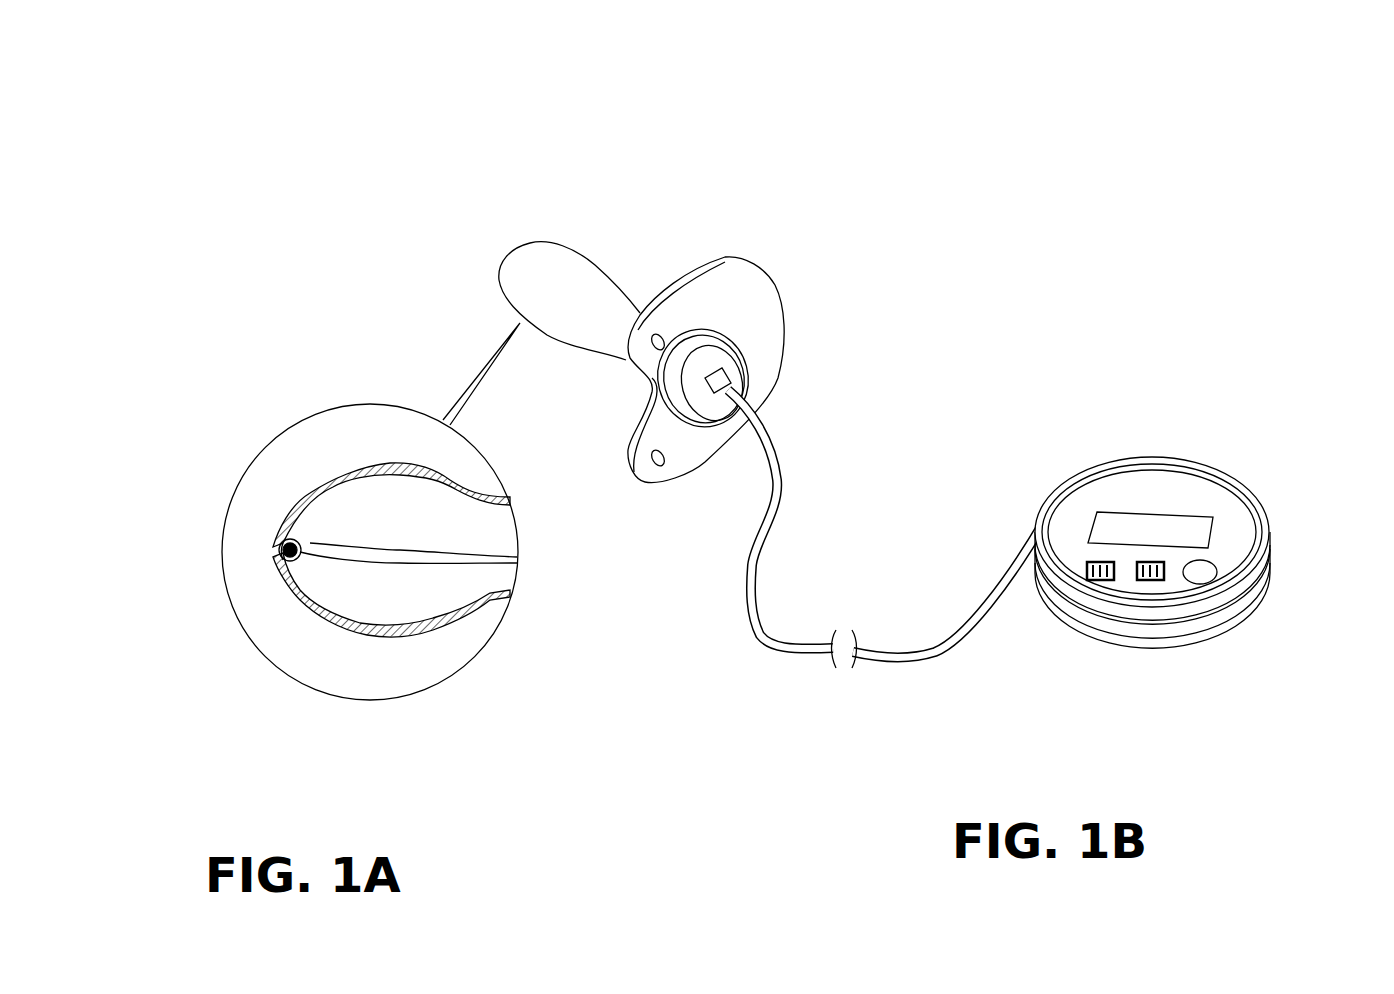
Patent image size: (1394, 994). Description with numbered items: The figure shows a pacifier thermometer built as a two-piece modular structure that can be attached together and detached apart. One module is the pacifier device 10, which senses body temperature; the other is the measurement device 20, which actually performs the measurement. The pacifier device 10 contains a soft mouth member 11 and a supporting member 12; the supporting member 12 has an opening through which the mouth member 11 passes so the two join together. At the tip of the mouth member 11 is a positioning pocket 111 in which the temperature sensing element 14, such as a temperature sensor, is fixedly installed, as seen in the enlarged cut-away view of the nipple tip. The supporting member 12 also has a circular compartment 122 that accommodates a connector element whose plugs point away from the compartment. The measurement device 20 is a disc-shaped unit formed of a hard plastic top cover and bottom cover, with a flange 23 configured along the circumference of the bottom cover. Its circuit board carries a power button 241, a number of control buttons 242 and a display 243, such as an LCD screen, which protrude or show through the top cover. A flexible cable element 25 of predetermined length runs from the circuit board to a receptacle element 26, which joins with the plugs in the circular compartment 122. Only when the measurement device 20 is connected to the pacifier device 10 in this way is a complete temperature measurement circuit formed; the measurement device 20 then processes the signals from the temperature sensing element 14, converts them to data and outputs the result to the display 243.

In FIG. 1B, the pacifier device 10 is at (697, 243).
In FIG. 1A, the mouth member 11 is at (385, 637).
In FIG. 1B, the mouth member 11 is at (535, 257).
In FIG. 1B, the supporting member 12 is at (718, 382).
In FIG. 1A, the temperature sensing element 14 is at (290, 545).
In FIG. 1B, the measurement device 20 is at (1191, 520).
In FIG. 1B, the flange 23 is at (1186, 624).
In FIG. 1B, the cable element 25 is at (793, 657).
In FIG. 1B, the receptacle element 26 is at (706, 410).
In FIG. 1A, the positioning pocket 111 is at (287, 583).
In FIG. 1B, the circular compartment 122 is at (634, 474).
In FIG. 1B, the power button 241 is at (1200, 572).
In FIG. 1B, the control buttons 242 is at (1095, 580).
In FIG. 1B, the display 243 is at (1117, 525).